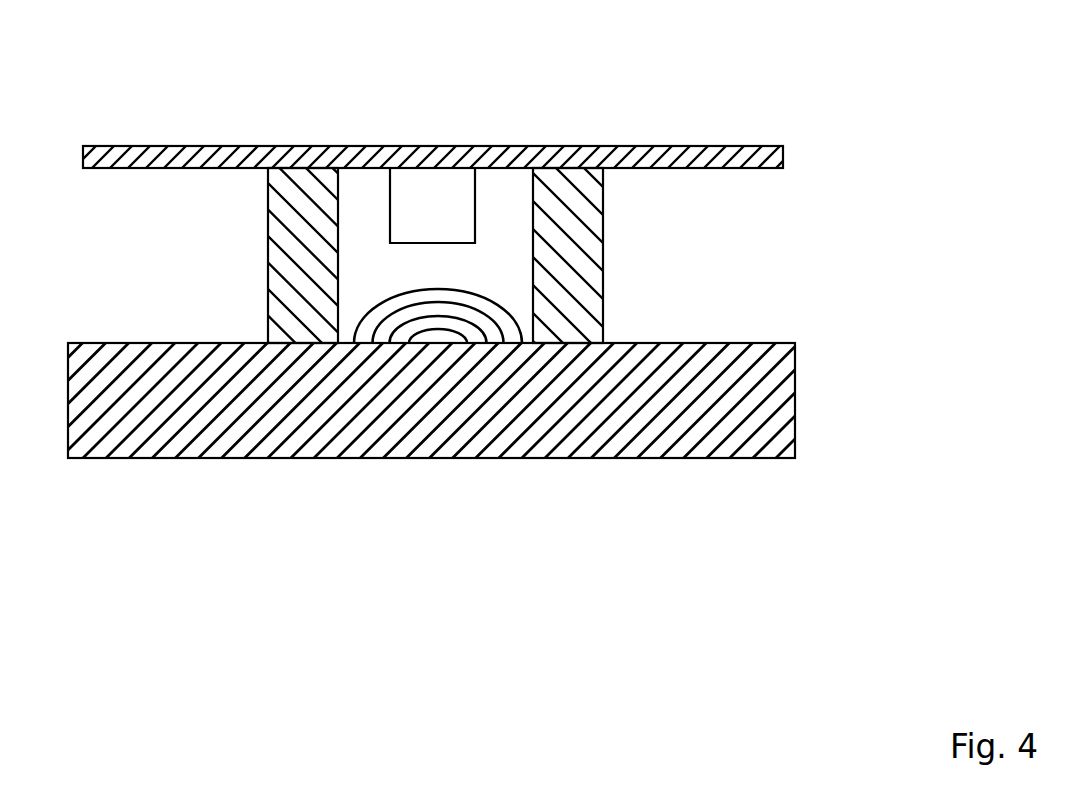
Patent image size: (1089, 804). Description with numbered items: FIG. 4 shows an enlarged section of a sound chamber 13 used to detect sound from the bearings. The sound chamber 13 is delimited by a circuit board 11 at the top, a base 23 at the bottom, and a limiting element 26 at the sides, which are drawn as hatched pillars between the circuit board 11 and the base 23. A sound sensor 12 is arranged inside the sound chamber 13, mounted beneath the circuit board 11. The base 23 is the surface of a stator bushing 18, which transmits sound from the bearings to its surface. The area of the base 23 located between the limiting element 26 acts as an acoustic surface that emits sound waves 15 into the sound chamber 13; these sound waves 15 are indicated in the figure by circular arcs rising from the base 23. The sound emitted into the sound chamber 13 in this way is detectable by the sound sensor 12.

The circuit board 11 is at (188, 152).
The sound sensor 12 is at (445, 187).
The sound chamber 13 is at (368, 207).
The sound waves 15 is at (482, 313).
The stator bushing 18 is at (290, 438).
The base 23 is at (243, 342).
The limiting element 26 is at (282, 233).